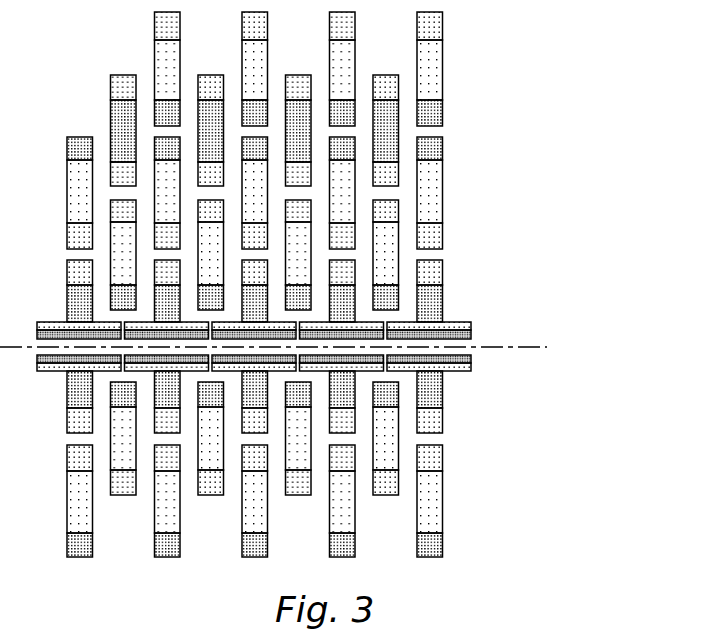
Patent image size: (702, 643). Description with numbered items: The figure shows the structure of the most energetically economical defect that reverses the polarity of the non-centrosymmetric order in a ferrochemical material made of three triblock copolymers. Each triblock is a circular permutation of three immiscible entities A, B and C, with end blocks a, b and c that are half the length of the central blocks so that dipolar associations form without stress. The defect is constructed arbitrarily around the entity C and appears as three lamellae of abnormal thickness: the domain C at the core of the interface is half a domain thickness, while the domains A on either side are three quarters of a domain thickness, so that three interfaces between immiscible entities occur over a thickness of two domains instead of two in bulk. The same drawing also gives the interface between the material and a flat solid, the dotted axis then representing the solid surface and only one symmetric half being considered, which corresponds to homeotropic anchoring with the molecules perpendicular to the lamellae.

The immiscible entity A is at (553, 160).
The immiscible entity B is at (553, 100).
The immiscible entity C is at (553, 223).
The end block a is at (280, 511).
The end block b is at (255, 255).
The end block c is at (553, 40).